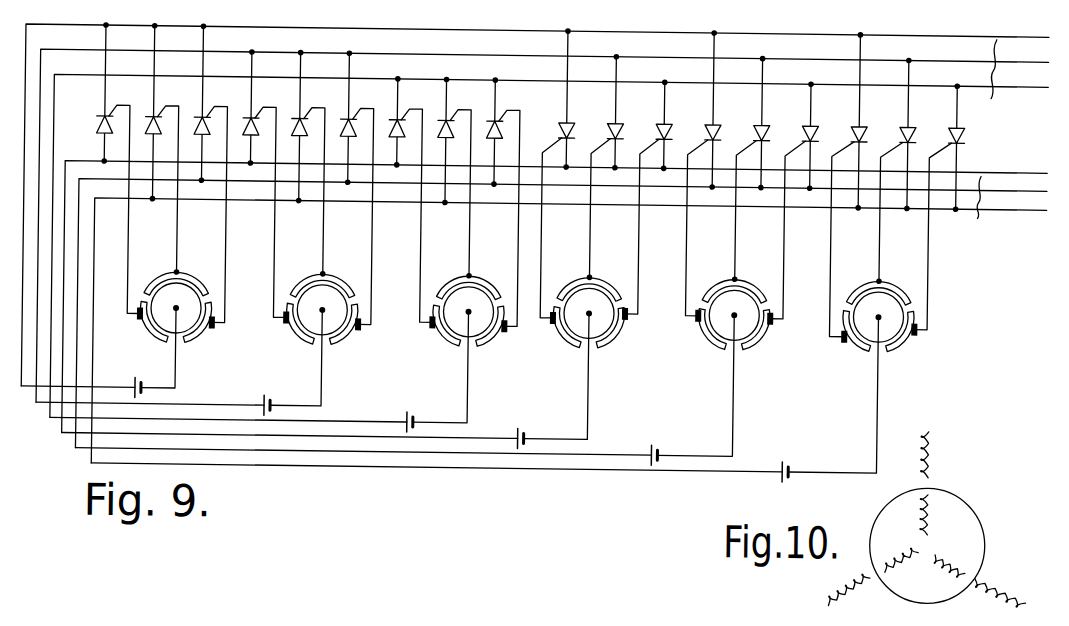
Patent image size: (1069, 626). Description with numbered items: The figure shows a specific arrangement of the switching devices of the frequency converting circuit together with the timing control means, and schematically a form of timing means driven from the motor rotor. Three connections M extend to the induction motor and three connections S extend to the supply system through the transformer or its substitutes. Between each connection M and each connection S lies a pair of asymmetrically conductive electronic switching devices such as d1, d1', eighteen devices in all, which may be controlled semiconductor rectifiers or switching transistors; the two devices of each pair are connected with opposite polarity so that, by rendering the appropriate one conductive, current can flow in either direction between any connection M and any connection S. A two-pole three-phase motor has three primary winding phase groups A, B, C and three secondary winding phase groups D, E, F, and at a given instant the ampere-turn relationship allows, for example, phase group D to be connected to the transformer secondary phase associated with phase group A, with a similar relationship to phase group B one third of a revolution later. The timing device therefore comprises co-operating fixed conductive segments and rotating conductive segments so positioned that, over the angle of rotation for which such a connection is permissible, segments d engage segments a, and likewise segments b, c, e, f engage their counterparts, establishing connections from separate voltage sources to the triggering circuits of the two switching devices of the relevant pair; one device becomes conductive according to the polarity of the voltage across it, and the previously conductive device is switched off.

In FIG. 9, the primary winding phase group A is at (1014, 30).
In FIG. 10, the primary winding phase group A is at (938, 455).
In FIG. 9, the primary winding phase group B is at (1015, 54).
In FIG. 10, the primary winding phase group B is at (1000, 598).
In FIG. 9, the primary winding phase group C is at (1015, 76).
In FIG. 10, the primary winding phase group C is at (849, 596).
In FIG. 9, the secondary winding phase group D is at (1042, 159).
In FIG. 10, the secondary winding phase group D is at (938, 517).
In FIG. 9, the secondary winding phase group E is at (1036, 174).
In FIG. 10, the secondary winding phase group E is at (955, 555).
In FIG. 9, the secondary winding phase group F is at (1034, 207).
In FIG. 10, the secondary winding phase group F is at (897, 554).
In FIG. 9, the connections to induction motor M is at (996, 84).
In FIG. 9, the connections to supply system S is at (993, 202).
In FIG. 9, the asymmetrically conductive electronic switching device d1 is at (101, 168).
In FIG. 9, the asymmetrically conductive electronic switching device d1' is at (574, 173).
In FIG. 9, the conductive segment a is at (176, 307).
In FIG. 9, the conductive segment b is at (322, 309).
In FIG. 9, the conductive segment c is at (469, 311).
In FIG. 9, the conductive segment d is at (588, 313).
In FIG. 9, the conductive segment e is at (734, 315).
In FIG. 9, the conductive segment f is at (878, 317).